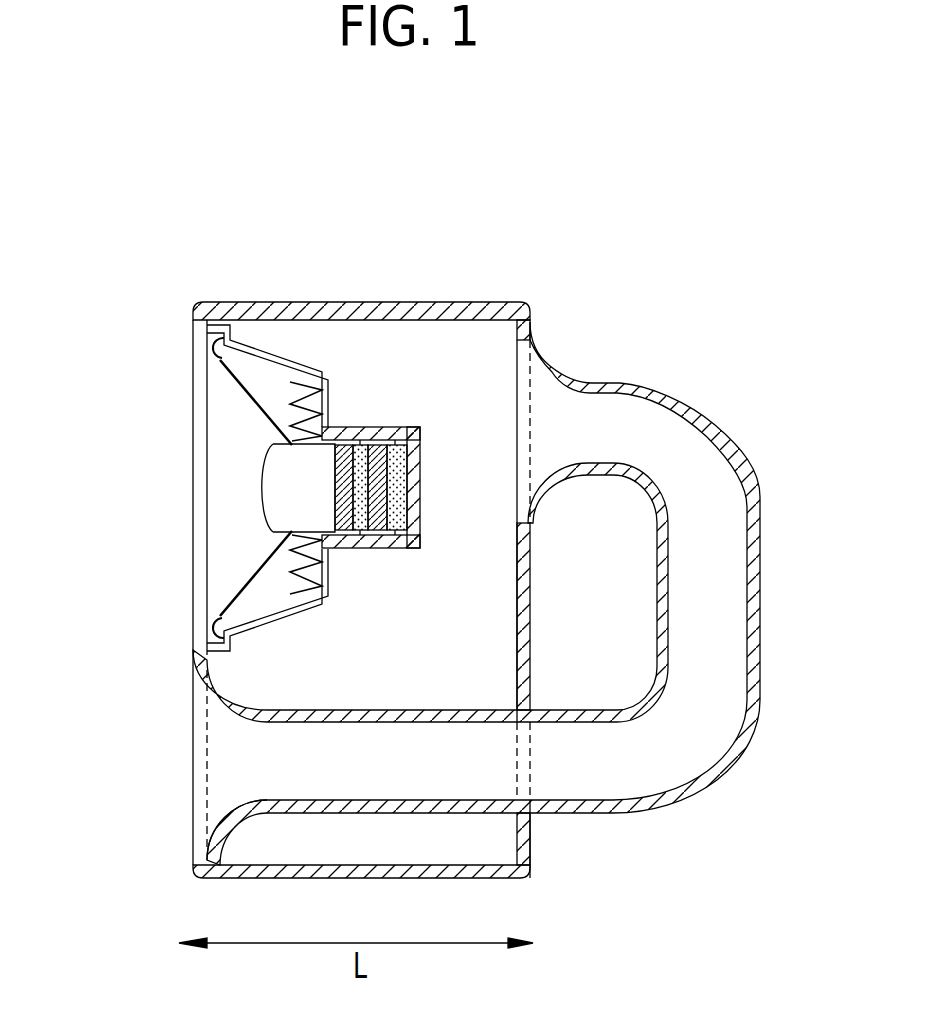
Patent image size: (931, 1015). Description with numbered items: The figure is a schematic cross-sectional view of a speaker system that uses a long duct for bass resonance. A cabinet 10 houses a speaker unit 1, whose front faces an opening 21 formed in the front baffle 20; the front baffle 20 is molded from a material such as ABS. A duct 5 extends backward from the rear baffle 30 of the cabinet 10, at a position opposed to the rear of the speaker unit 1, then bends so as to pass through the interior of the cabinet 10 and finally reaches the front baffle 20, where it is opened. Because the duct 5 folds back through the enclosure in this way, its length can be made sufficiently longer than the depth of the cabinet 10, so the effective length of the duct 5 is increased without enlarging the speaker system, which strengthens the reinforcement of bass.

The speaker unit 1 is at (265, 477).
The duct 5 is at (760, 568).
The cabinet 10 is at (298, 310).
The front baffle 20 is at (193, 864).
The opening 21 is at (197, 598).
The rear baffle 30 is at (535, 856).